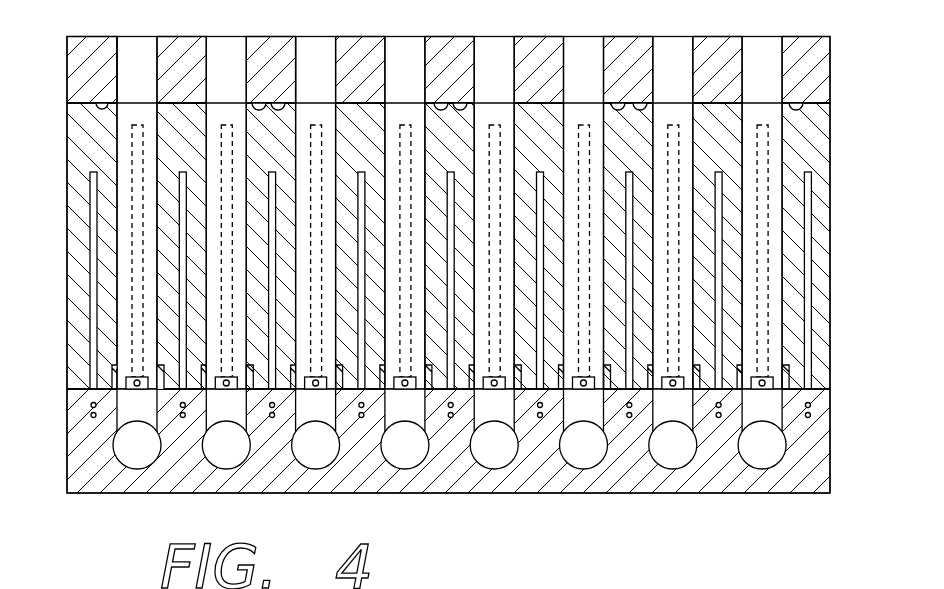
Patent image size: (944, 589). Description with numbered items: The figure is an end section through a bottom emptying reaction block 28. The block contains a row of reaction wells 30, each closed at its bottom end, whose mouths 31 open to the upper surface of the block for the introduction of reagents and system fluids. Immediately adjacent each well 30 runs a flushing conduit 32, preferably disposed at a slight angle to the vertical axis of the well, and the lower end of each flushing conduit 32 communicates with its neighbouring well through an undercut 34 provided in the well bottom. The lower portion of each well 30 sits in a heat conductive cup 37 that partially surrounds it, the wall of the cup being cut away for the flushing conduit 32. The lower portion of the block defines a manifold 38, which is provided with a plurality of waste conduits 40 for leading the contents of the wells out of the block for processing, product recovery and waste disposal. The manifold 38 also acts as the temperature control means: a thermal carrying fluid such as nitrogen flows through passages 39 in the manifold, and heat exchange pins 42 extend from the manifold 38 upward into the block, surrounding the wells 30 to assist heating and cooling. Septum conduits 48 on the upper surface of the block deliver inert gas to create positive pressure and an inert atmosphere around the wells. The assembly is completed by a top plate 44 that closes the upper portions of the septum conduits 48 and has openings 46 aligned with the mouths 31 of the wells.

The reaction block 28 is at (831, 134).
The reaction well 30 is at (120, 160).
The mouth 31 is at (115, 101).
The flushing conduit 32 is at (222, 126).
The undercut 34 is at (127, 380).
The heat conductive cup 37 is at (110, 380).
The manifold 38 is at (700, 493).
The passages 39 is at (90, 415).
The waste conduit 40 is at (128, 458).
The heat exchange pin 42 is at (80, 263).
The top plate 44 is at (68, 51).
The opening 46 is at (296, 53).
The septum conduit 48 is at (102, 107).